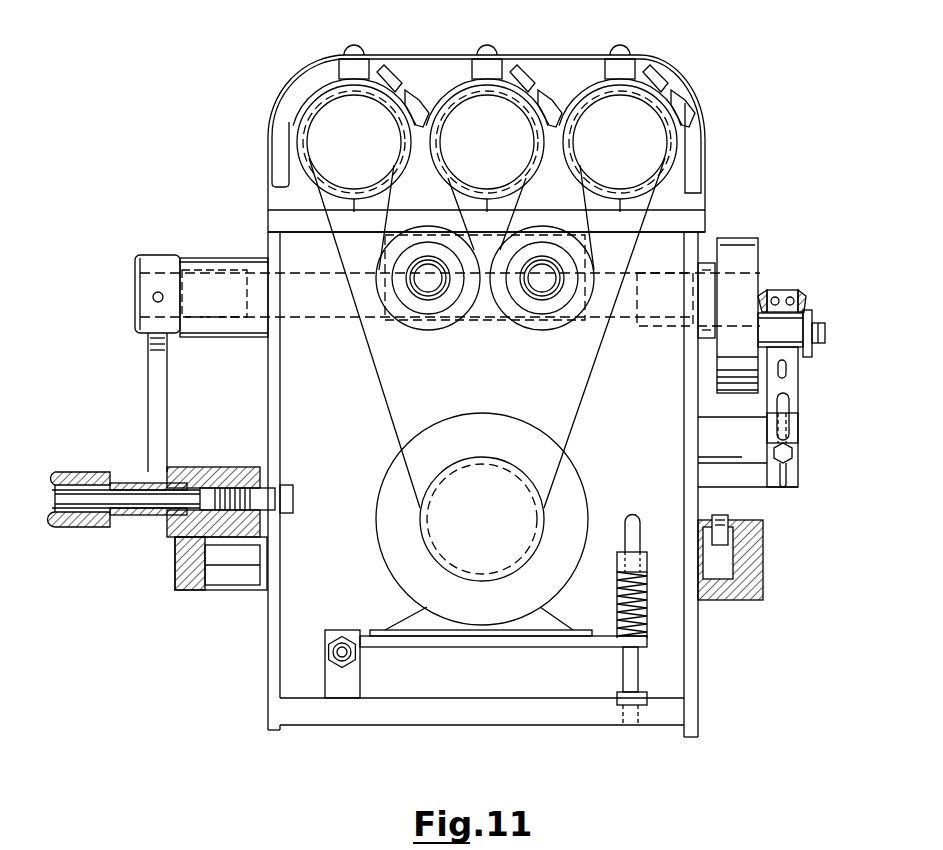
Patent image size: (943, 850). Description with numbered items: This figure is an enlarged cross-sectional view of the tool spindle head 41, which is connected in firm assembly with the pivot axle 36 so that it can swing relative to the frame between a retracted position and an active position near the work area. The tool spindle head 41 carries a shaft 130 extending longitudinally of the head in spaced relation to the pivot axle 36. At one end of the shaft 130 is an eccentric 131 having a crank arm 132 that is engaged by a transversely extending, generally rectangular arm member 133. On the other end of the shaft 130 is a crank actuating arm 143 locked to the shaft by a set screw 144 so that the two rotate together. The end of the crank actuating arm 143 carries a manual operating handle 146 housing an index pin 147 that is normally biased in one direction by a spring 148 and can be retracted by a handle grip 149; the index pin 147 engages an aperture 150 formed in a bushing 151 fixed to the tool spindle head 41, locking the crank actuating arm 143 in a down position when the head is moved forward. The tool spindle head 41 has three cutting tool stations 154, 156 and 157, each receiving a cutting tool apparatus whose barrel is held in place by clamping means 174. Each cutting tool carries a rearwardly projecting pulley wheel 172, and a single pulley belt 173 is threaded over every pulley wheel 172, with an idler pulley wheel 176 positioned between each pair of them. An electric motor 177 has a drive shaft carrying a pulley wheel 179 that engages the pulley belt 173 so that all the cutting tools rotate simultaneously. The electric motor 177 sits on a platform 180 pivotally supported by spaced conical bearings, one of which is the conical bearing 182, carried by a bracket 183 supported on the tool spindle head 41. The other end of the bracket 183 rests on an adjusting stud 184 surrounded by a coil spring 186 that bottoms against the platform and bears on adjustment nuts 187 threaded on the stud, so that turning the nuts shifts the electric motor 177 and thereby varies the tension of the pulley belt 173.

The pivot axle 36 is at (747, 600).
The tool spindle head 41 is at (270, 394).
The shaft 130 is at (322, 318).
The eccentric 131 is at (737, 252).
The crank arm 132 is at (783, 330).
The arm member 133 is at (787, 292).
The crank actuating arm 143 is at (150, 394).
The set screw 144 is at (153, 298).
The manual operating handle 146 is at (130, 518).
The index pin 147 is at (130, 496).
The spring 148 is at (90, 476).
The handle grip 149 is at (100, 530).
The aperture 150 is at (228, 474).
The bushing 151 is at (185, 468).
The cutting tool station 154 is at (607, 103).
The cutting tool station 156 is at (465, 107).
The cutting tool station 157 is at (345, 100).
The pulley wheel 172 is at (485, 217).
The pulley belt 173 is at (388, 402).
The clamping means 174 is at (417, 97).
The idler pulley wheel 176 is at (443, 328).
The electric motor 177 is at (563, 485).
The pulley wheel 179 is at (505, 465).
The platform 180 is at (412, 622).
The conical bearing 182 is at (342, 636).
The bracket 183 is at (470, 647).
The adjusting stud 184 is at (633, 668).
The coil spring 186 is at (641, 602).
The adjustment nuts 187 is at (641, 558).